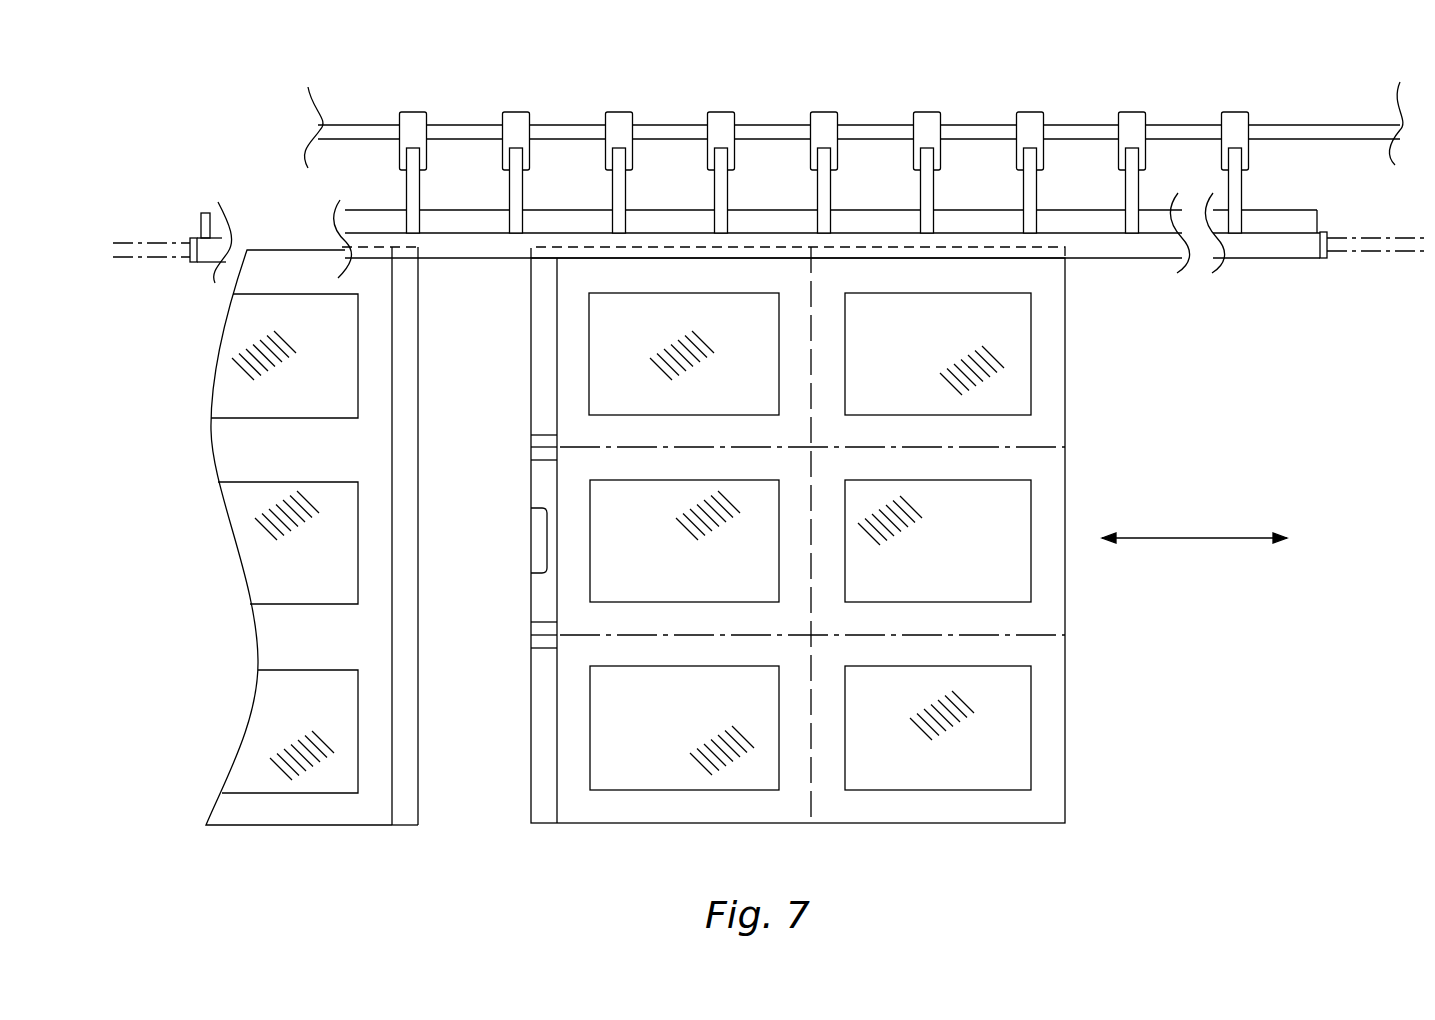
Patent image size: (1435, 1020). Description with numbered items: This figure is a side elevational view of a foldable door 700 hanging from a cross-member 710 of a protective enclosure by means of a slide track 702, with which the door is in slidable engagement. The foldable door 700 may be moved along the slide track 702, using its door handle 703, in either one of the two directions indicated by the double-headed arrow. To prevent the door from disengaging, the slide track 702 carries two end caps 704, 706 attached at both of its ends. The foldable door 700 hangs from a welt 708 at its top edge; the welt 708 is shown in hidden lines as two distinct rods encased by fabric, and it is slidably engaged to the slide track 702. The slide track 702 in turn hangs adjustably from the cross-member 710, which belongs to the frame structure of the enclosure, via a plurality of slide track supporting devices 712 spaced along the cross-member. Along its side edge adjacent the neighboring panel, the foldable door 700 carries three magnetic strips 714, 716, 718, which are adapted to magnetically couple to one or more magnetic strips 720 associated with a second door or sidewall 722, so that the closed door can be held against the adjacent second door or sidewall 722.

The foldable door 700 is at (1112, 768).
The slide track 702 is at (1255, 246).
The door handle 703 is at (538, 553).
The end cap 704 is at (193, 263).
The end cap 706 is at (1325, 259).
The welt 708 is at (1053, 250).
The cross-member 710 is at (1328, 132).
The slide track supporting devices 712 is at (824, 146).
The magnetic strip 714 is at (535, 283).
The magnetic strip 716 is at (535, 480).
The magnetic strip 718 is at (538, 672).
The magnetic strips 720 is at (418, 778).
The second door or sidewall 722 is at (228, 619).